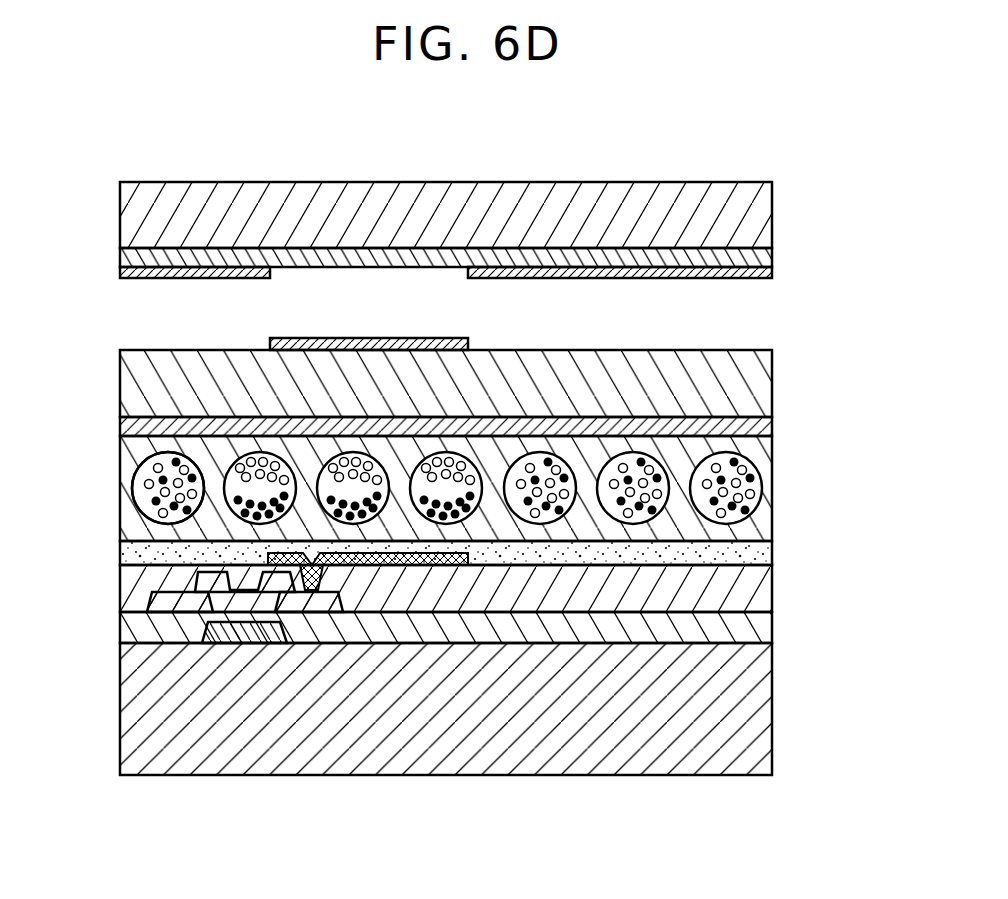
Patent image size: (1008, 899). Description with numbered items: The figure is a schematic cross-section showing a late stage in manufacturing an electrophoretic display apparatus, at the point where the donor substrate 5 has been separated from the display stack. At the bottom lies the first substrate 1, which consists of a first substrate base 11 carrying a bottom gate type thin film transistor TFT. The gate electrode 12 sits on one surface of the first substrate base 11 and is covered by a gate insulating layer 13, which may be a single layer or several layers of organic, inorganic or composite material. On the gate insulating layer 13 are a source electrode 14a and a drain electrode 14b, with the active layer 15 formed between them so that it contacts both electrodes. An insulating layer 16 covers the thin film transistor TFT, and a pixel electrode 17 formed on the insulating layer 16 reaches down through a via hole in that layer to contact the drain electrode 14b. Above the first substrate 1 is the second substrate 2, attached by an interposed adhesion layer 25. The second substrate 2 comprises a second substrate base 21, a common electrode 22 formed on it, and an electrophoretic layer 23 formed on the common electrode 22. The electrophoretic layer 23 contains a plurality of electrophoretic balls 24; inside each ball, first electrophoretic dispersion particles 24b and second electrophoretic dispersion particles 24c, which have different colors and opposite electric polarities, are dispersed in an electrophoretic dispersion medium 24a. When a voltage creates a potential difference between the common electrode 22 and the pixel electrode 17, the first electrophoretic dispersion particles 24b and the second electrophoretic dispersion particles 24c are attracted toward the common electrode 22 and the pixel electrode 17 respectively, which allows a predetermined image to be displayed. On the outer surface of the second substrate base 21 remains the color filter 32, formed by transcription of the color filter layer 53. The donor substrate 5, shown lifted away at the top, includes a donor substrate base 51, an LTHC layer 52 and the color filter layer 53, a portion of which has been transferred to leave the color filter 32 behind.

The donor substrate 5 is at (490, 193).
The donor substrate base 51 is at (772, 207).
The LTHC layer 52 is at (772, 258).
The color filter layer 53 is at (772, 277).
The color filter 32 is at (373, 338).
The second substrate 2 is at (469, 457).
The second substrate base 21 is at (772, 381).
The common electrode 22 is at (772, 431).
The electrophoretic layer 23 is at (772, 528).
The electrophoretic ball 24 is at (441, 479).
The electrophoretic dispersion medium 24a is at (138, 466).
The first electrophoretic dispersion particles 24b is at (136, 484).
The second electrophoretic dispersion particles 24c is at (146, 501).
The adhesion layer 25 is at (481, 553).
The first substrate 1 is at (449, 718).
The first substrate base 11 is at (768, 710).
The gate insulating layer 13 is at (768, 628).
The insulating layer 16 is at (768, 592).
The pixel electrode 17 is at (413, 562).
The thin film transistor TFT is at (213, 707).
The gate electrode 12 is at (263, 632).
The source electrode 14a is at (176, 606).
The drain electrode 14b is at (319, 606).
The active layer 15 is at (223, 593).